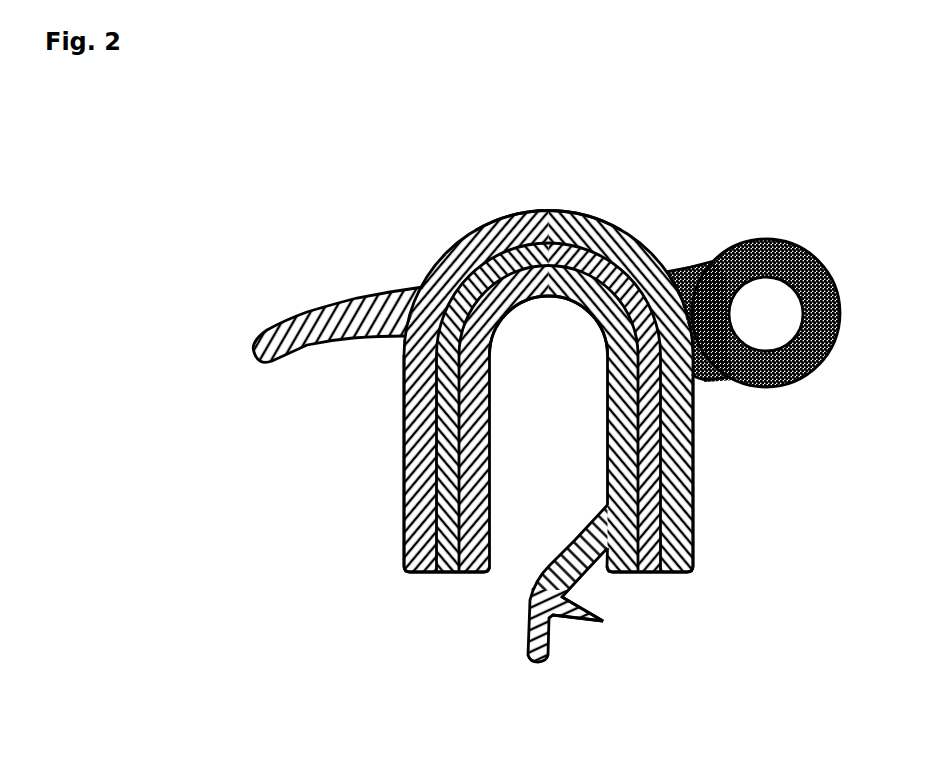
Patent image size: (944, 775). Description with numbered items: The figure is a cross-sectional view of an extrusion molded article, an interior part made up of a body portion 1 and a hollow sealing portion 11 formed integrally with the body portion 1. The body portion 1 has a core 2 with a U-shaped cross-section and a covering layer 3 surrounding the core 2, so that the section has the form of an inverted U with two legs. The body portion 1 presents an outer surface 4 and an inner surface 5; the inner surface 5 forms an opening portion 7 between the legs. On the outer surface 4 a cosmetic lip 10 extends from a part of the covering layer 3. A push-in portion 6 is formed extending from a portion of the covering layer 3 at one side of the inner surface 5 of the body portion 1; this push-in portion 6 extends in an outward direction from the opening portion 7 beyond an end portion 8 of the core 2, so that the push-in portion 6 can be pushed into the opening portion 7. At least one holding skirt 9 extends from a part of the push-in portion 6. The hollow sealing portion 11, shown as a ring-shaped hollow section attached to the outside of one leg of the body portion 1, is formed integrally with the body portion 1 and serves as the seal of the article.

The body portion 1 is at (623, 228).
The core 2 is at (547, 240).
The covering layer 3 is at (412, 388).
The outer surface 4 is at (463, 237).
The inner surface 5 is at (607, 373).
The push-in portion 6 is at (540, 578).
The opening portion 7 is at (548, 337).
The end portion 8 is at (417, 575).
The holding skirt 9 is at (570, 617).
The cosmetic lip 10 is at (322, 312).
The hollow sealing portion 11 is at (820, 253).